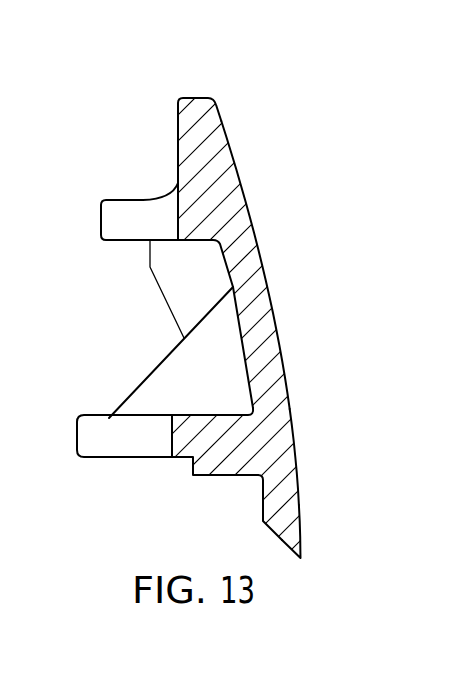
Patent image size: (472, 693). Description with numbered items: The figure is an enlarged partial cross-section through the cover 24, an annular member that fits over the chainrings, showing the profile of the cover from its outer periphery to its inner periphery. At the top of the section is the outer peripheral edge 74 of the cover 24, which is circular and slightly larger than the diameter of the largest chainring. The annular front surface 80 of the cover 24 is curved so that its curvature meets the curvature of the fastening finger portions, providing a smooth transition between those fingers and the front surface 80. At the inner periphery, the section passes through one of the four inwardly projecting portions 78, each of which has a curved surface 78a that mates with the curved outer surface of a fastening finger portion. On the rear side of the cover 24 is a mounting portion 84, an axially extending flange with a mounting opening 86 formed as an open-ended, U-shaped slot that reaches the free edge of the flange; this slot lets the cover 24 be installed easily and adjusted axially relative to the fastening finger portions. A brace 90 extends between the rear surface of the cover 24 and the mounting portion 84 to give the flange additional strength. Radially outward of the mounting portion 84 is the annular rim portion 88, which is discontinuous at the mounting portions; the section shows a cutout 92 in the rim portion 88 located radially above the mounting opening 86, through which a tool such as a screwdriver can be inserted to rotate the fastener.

The cover 24 is at (112, 154).
The outer peripheral edge 74 is at (200, 94).
The inwardly projecting portion 78 is at (299, 470).
The curved surface 78a is at (301, 558).
The annular front surface 80 is at (257, 232).
The mounting portion 84 is at (188, 415).
The mounting opening 86 is at (171, 441).
The annular rim portion 88 is at (143, 199).
The brace 90 is at (170, 349).
The cutout 92 is at (177, 235).